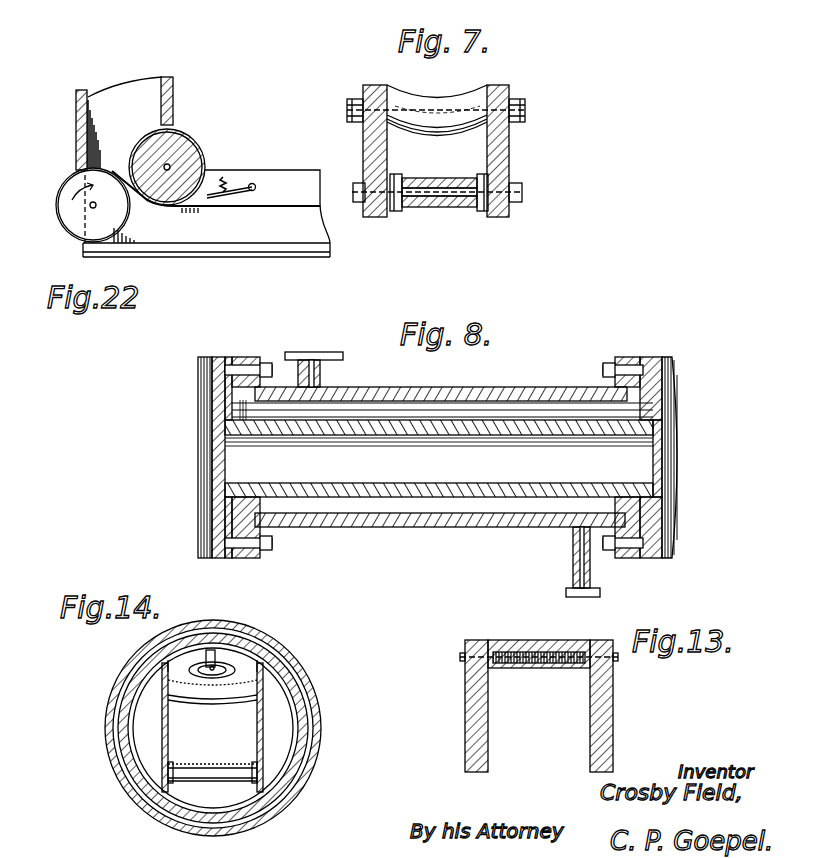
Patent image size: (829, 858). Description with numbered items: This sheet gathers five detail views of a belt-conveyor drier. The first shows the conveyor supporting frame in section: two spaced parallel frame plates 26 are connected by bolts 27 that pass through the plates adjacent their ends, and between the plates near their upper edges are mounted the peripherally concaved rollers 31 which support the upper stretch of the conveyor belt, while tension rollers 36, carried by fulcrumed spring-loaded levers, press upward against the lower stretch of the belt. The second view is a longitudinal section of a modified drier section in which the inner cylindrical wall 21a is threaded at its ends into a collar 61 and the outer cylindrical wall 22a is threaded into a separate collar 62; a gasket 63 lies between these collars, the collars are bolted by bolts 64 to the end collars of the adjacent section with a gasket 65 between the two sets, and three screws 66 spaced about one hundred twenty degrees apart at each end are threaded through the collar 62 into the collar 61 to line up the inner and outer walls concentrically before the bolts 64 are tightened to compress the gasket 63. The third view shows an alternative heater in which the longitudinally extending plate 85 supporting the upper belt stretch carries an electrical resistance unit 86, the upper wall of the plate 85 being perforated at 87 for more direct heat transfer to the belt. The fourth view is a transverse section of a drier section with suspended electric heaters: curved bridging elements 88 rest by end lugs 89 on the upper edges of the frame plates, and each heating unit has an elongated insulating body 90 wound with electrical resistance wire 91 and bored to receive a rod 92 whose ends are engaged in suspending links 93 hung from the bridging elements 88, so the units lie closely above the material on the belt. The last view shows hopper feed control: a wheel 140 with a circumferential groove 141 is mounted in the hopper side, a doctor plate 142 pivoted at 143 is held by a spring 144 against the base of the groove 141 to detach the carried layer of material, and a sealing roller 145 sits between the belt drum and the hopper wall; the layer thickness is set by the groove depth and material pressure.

In FIG. 22, the wheel 140 is at (192, 145).
In FIG. 22, the circumferential groove 141 is at (202, 165).
In FIG. 22, the doctor plate 142 is at (216, 200).
In FIG. 22, the pivot 143 is at (258, 187).
In FIG. 22, the spring 144 is at (228, 180).
In FIG. 22, the sealing roller 145 is at (78, 165).
In FIG. 7, the frame plates 26 is at (369, 85).
In FIG. 7, the bolts 27 is at (526, 192).
In FIG. 7, the peripherally concaved rollers 31 is at (432, 95).
In FIG. 7, the tension rollers 36 is at (425, 178).
In FIG. 8, the collar 61 is at (200, 517).
In FIG. 8, the collar 62 is at (262, 558).
In FIG. 8, the gasket 63 is at (238, 558).
In FIG. 8, the bolts 64 is at (273, 544).
In FIG. 8, the gasket 65 is at (668, 445).
In FIG. 8, the screws 66 is at (282, 386).
In FIG. 8, the inner cylindrical wall 21a is at (363, 497).
In FIG. 8, the outer cylindrical wall 22a is at (445, 527).
In FIG. 13, the plate 85 is at (552, 668).
In FIG. 13, the electrical resistance unit 86 is at (518, 668).
In FIG. 13, the perforations 87 is at (560, 640).
In FIG. 14, the bridging elements 88 is at (245, 652).
In FIG. 14, the lugs 89 is at (272, 662).
In FIG. 14, the insulating body 90 is at (210, 674).
In FIG. 14, the electrical resistance wire 91 is at (190, 690).
In FIG. 14, the rod 92 is at (215, 673).
In FIG. 14, the suspending links 93 is at (216, 648).